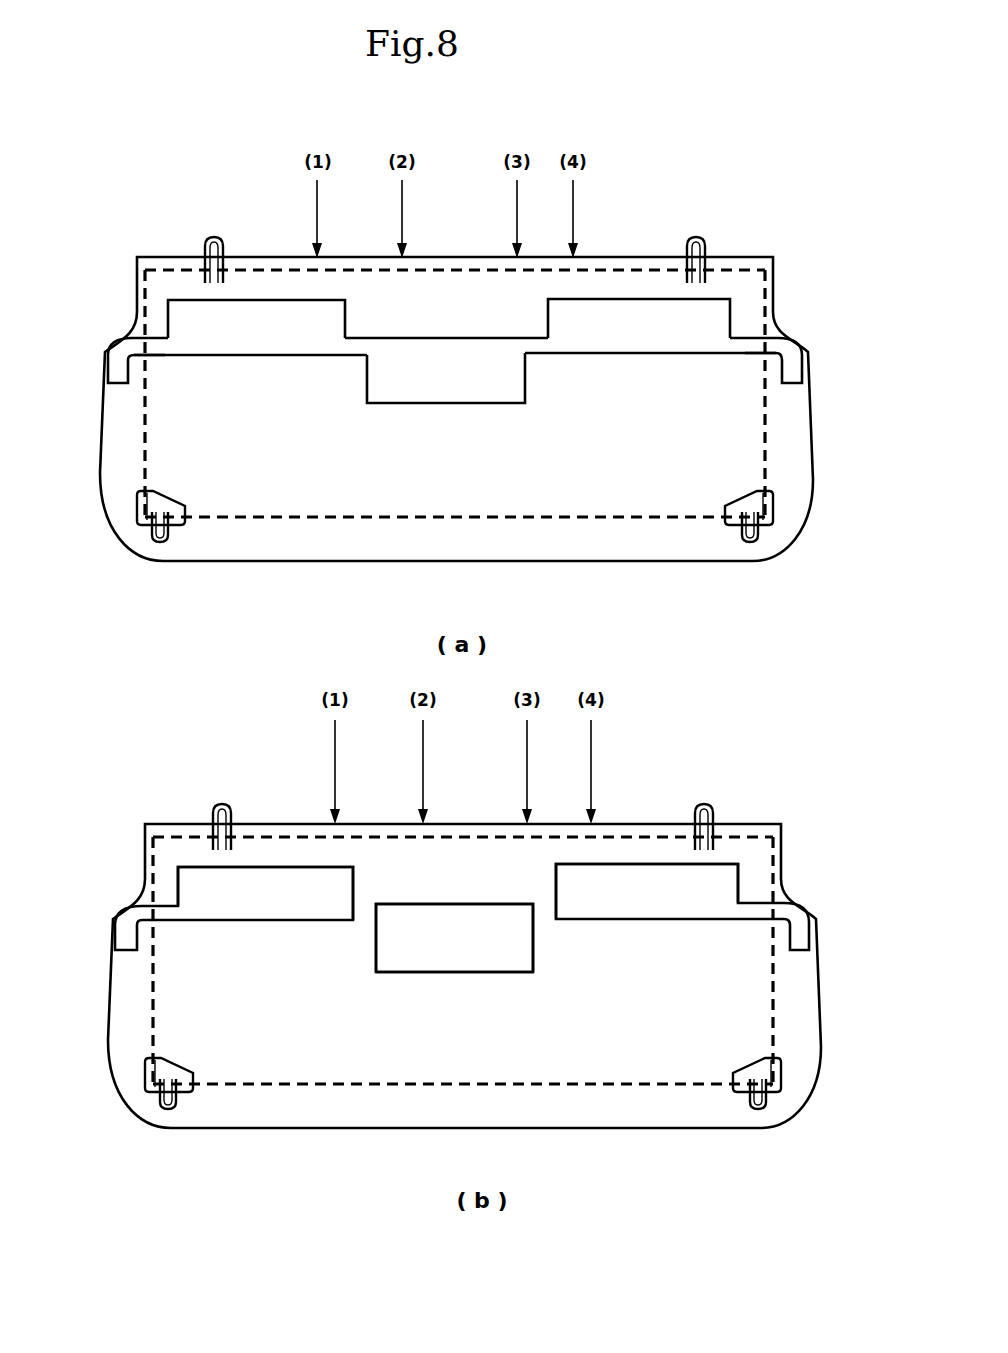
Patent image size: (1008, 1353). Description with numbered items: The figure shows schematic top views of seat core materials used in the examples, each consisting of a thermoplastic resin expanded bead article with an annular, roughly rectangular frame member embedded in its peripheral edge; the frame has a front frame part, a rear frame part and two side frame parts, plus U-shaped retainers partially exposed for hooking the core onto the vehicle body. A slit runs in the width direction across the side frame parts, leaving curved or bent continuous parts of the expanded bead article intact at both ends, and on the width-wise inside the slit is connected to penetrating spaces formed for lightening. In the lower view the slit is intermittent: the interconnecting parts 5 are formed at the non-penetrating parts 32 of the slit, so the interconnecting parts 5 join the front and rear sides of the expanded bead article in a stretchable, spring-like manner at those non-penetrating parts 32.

The interconnecting part 5 is at (367, 917).
The non-penetrating part 32 is at (548, 910).